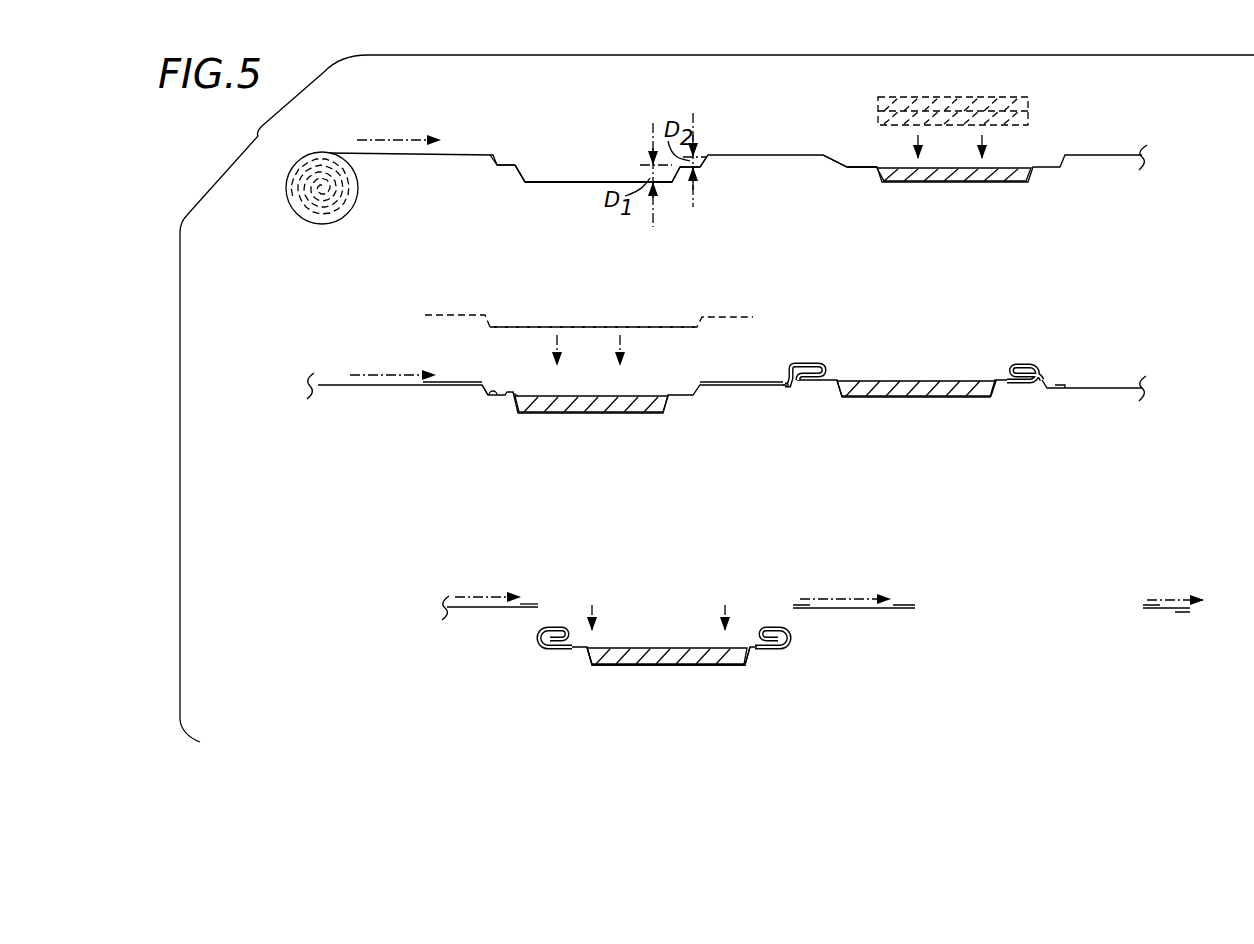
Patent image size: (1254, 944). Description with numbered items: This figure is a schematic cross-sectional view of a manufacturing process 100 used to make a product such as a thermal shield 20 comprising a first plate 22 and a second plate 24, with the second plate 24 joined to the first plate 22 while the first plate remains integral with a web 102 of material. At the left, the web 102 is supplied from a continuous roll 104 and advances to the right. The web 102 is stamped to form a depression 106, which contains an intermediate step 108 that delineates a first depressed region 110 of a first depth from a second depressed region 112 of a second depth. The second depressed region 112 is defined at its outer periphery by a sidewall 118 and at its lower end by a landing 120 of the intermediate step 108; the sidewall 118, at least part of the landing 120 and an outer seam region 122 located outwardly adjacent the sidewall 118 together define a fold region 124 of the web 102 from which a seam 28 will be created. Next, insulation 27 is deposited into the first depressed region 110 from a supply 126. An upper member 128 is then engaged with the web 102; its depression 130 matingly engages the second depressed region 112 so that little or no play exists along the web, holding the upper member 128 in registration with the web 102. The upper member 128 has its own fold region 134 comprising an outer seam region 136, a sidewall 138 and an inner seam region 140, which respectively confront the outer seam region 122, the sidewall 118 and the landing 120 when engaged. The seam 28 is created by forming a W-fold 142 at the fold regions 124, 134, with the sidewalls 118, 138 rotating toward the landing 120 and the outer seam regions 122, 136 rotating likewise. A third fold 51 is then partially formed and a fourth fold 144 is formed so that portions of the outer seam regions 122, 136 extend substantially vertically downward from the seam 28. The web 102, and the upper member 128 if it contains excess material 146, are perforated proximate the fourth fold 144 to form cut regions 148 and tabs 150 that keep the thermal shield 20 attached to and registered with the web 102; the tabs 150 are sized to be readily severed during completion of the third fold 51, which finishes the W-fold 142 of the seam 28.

The thermal shield 20 is at (620, 673).
The first plate 22 is at (660, 669).
The second plate 24 is at (635, 646).
The insulation 27 is at (1003, 178).
The seam 28 is at (533, 651).
The third fold 51 is at (1050, 369).
The manufacturing process 100 is at (1026, 684).
The web 102 is at (768, 154).
The continuous roll 104 is at (307, 220).
The depression 106 is at (548, 186).
The intermediate step 108 is at (505, 155).
The first depressed region 110 is at (580, 181).
The second depressed region 112 is at (705, 156).
The sidewall 118 is at (494, 153).
The landing 120 is at (520, 163).
The outer seam region 122 is at (824, 165).
The fold region 124 is at (848, 163).
The supply 126 is at (1062, 96).
The upper member 128 is at (668, 395).
The depression 130 is at (502, 322).
The fold region 134 is at (478, 312).
The outer seam region 136 is at (455, 382).
The sidewall 138 is at (489, 391).
The inner seam region 140 is at (486, 400).
The W-fold 142 is at (835, 361).
The fourth fold 144 is at (772, 373).
The excess material 146 is at (535, 603).
The cut regions 148 is at (1056, 381).
The tabs 150 is at (760, 381).